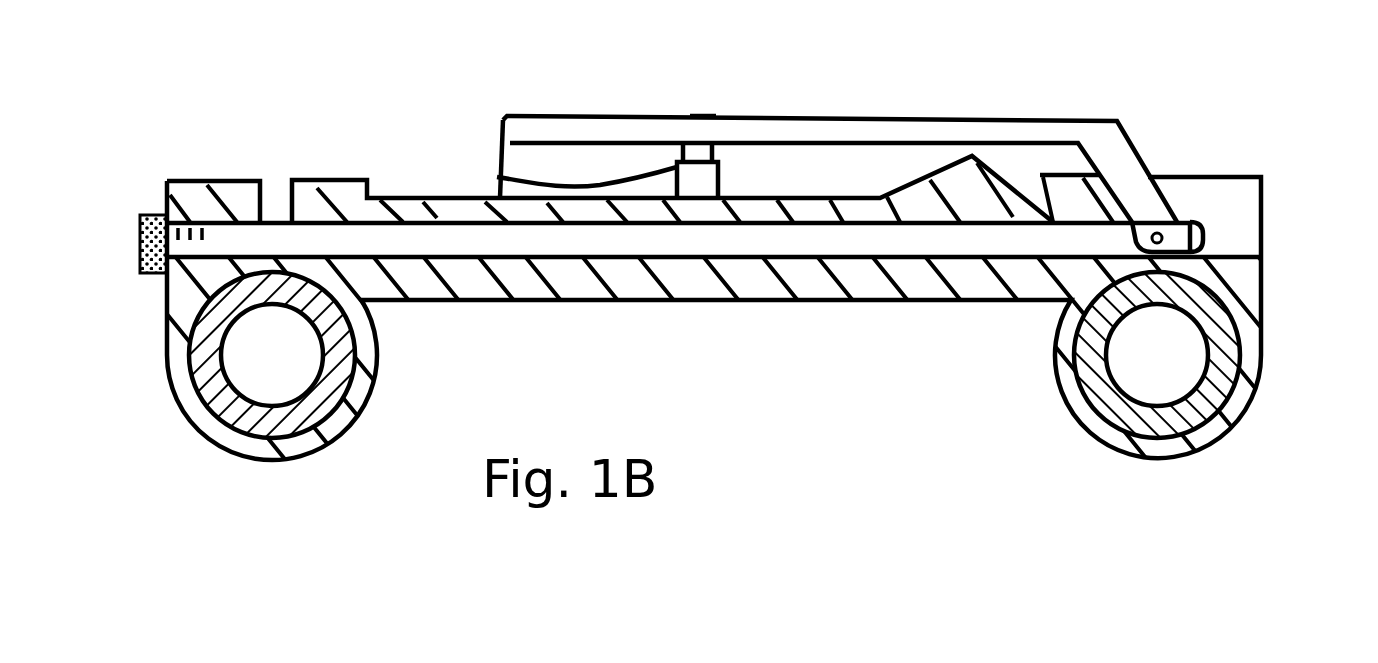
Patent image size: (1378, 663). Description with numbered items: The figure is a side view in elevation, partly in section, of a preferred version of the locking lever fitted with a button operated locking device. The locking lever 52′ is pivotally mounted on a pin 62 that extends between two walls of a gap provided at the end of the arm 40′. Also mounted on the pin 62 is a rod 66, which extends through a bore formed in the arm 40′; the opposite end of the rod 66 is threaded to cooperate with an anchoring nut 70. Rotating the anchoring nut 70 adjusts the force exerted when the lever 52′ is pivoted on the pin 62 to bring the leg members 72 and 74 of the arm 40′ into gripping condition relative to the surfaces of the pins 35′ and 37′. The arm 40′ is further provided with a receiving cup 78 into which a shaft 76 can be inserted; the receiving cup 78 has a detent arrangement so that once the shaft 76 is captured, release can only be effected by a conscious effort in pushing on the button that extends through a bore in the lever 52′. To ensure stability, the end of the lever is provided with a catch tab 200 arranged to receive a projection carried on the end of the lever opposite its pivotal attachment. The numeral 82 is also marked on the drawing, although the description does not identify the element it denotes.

The leg member 74 is at (190, 207).
The anchoring nut 70 is at (140, 268).
The rod 66 is at (490, 245).
The arm 40′ is at (743, 300).
The pin 35′ is at (320, 415).
The pin 37′ is at (1227, 425).
The leg member 72 is at (1243, 298).
The locking lever 52′ is at (850, 120).
The receiving cup 78 is at (500, 172).
The spring contact point 82 is at (710, 98).
The shaft 76 is at (712, 152).
The catch tab 200 is at (497, 177).
The pin 62 is at (1167, 222).